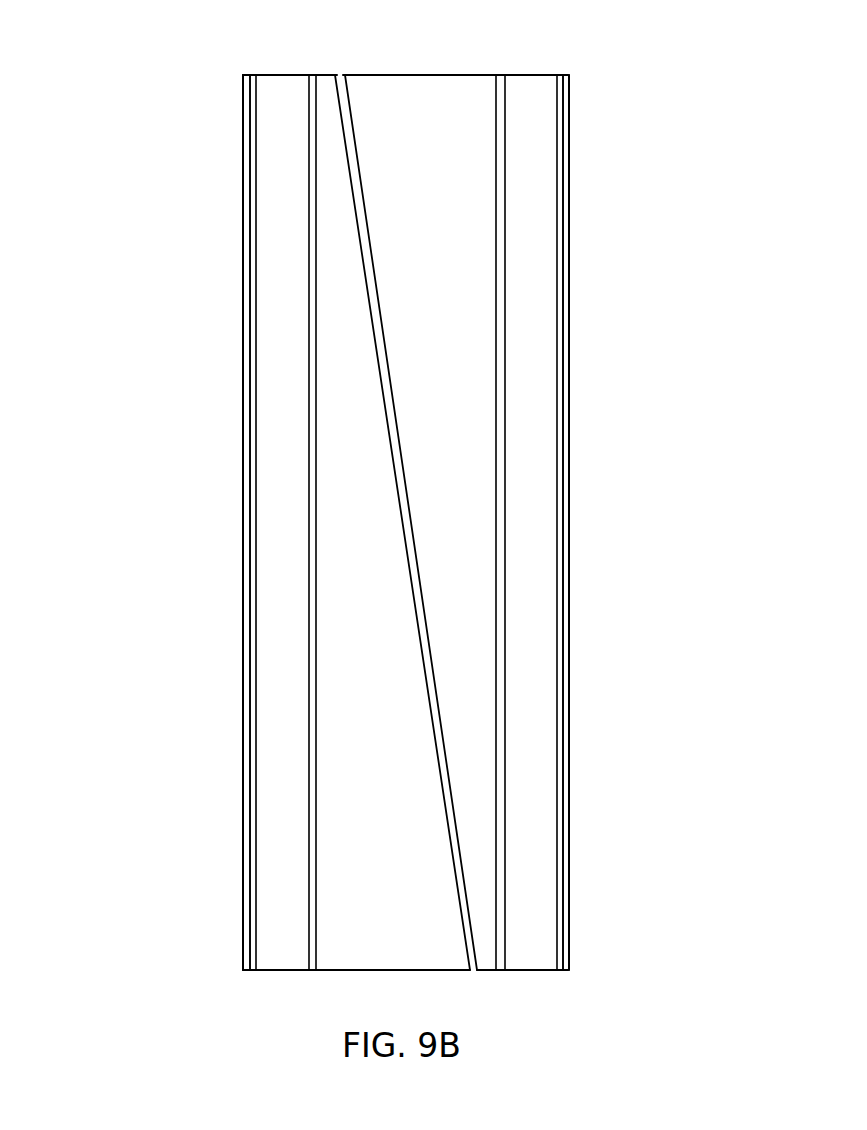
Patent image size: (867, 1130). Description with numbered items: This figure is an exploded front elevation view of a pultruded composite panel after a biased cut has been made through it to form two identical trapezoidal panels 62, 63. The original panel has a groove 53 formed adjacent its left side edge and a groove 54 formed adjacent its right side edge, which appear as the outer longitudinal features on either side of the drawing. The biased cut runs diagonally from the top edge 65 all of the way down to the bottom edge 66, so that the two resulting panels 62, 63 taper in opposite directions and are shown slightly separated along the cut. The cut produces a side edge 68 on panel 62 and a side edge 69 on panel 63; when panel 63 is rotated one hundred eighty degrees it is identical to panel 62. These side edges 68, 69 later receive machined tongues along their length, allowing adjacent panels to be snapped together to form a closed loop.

The groove 53 is at (243, 626).
The groove 54 is at (570, 735).
The trapezoidal panel 62 is at (222, 438).
The trapezoidal panel 63 is at (590, 445).
The top edge 65 is at (283, 75).
The bottom edge 66 is at (352, 972).
The side edge 68 is at (398, 503).
The side edge 69 is at (395, 425).